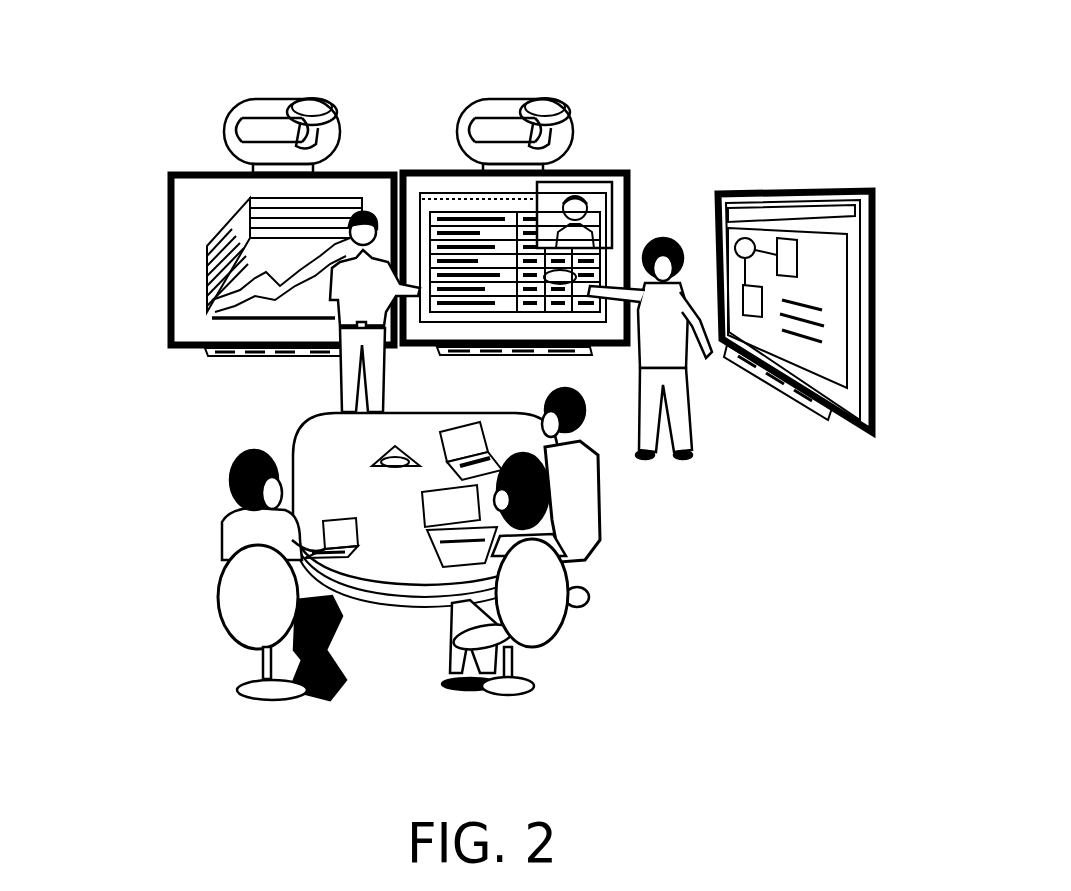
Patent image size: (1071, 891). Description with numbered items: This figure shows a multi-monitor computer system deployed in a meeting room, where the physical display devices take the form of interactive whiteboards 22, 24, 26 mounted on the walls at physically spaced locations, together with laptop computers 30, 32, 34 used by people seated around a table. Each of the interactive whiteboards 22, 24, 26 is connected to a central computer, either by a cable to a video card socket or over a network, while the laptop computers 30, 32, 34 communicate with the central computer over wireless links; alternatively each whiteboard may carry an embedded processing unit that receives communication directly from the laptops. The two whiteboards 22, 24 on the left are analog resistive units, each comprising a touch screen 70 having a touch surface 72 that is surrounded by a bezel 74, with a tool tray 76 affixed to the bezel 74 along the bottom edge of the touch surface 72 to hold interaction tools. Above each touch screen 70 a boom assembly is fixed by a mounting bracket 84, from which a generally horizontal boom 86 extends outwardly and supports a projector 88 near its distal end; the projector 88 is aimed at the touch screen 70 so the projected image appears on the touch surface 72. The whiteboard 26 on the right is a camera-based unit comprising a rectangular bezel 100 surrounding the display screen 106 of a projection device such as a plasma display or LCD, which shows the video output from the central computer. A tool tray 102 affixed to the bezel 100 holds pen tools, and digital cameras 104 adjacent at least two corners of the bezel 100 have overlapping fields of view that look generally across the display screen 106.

The interactive whiteboard 22 is at (510, 365).
The interactive whiteboard 24 is at (510, 365).
The interactive whiteboard 26 is at (836, 468).
The laptop computer 30 is at (300, 476).
The laptop computer 32 is at (392, 547).
The laptop computer 34 is at (488, 426).
The analog resistive touch screen 70 is at (640, 186).
The touch surface 72 is at (226, 321).
The bezel 74 is at (210, 262).
The tool tray 76 is at (218, 407).
The mounting bracket 84 is at (287, 87).
The boom 86 is at (535, 87).
The projector 88 is at (325, 63).
The bezel 100 is at (823, 190).
The tool tray 102 is at (790, 390).
The digital cameras 104 is at (838, 295).
The display screen 106 is at (845, 296).